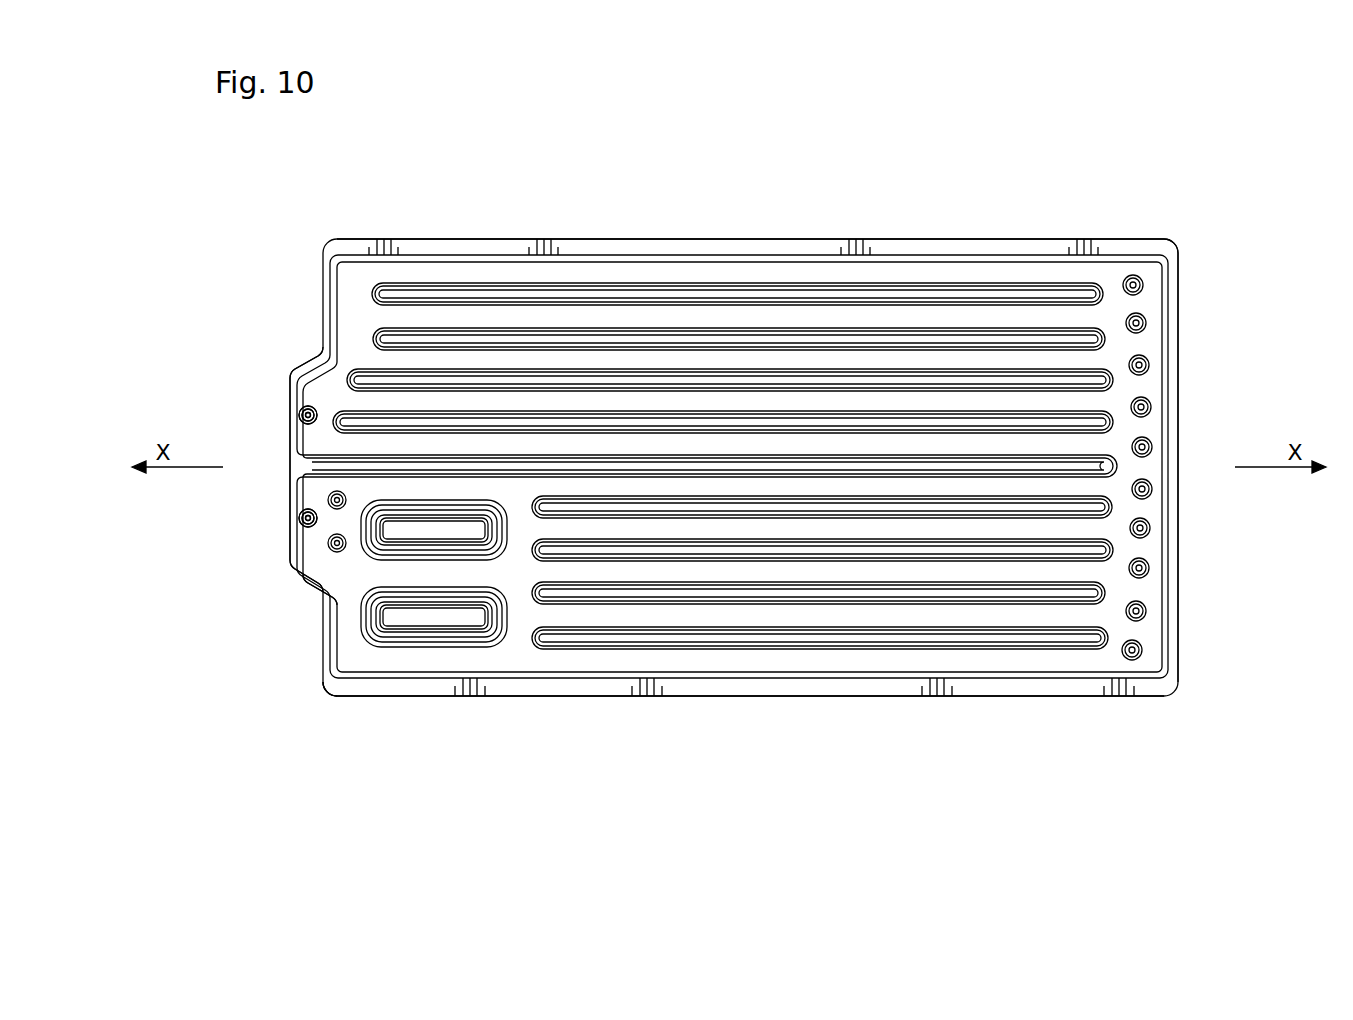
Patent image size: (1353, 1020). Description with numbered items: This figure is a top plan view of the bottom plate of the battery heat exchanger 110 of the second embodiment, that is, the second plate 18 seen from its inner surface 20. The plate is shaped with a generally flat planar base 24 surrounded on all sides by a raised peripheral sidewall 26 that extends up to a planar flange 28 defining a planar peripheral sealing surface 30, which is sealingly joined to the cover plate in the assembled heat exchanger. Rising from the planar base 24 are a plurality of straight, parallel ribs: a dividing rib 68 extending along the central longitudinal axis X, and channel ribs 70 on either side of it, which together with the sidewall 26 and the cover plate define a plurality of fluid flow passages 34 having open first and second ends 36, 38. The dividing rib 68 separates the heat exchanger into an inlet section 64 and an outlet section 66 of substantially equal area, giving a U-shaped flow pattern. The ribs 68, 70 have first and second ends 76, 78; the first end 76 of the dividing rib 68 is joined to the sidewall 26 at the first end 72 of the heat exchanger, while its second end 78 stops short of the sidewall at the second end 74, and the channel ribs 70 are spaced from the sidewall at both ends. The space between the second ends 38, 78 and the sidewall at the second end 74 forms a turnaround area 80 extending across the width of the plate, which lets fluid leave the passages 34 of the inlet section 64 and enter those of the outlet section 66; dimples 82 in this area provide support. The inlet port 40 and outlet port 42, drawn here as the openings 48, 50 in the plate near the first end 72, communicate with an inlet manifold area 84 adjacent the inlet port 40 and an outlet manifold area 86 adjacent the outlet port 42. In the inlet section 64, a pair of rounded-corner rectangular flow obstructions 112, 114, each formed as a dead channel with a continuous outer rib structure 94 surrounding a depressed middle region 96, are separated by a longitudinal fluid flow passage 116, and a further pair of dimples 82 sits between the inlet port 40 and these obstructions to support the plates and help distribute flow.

The heat exchanger 110 is at (180, 320).
The second plate 18 is at (1182, 460).
The inner surface 20 is at (1033, 270).
The planar base 24 is at (363, 277).
The peripheral sidewall 26 is at (785, 672).
The planar flange 28 is at (355, 688).
The planar peripheral sealing surface 30 is at (355, 688).
The fluid flow passages 34 is at (977, 447).
The first ends 36 is at (387, 315).
The second ends 38 is at (1097, 358).
The inlet port 40 is at (300, 525).
The outlet port 42 is at (300, 412).
The inlet 48 is at (300, 525).
The outlet 50 is at (300, 412).
The inlet section 64 is at (702, 562).
The outlet section 66 is at (712, 336).
The dividing rib 68 is at (480, 470).
The channel ribs 70 is at (800, 423).
The first end 72 is at (289, 464).
The second end 74 is at (1181, 268).
The first ends 76 is at (373, 297).
The second ends 78 is at (1108, 318).
The turnaround area 80 is at (1138, 547).
The dimples 82 is at (1140, 278).
The inlet manifold area 84 is at (352, 578).
The outlet manifold area 86 is at (327, 390).
The continuous outer rib structure 94 is at (490, 597).
The depressed middle region 96 is at (412, 620).
The flow obstruction 112 is at (440, 640).
The flow obstruction 114 is at (408, 547).
The longitudinal fluid flow passage 116 is at (357, 587).